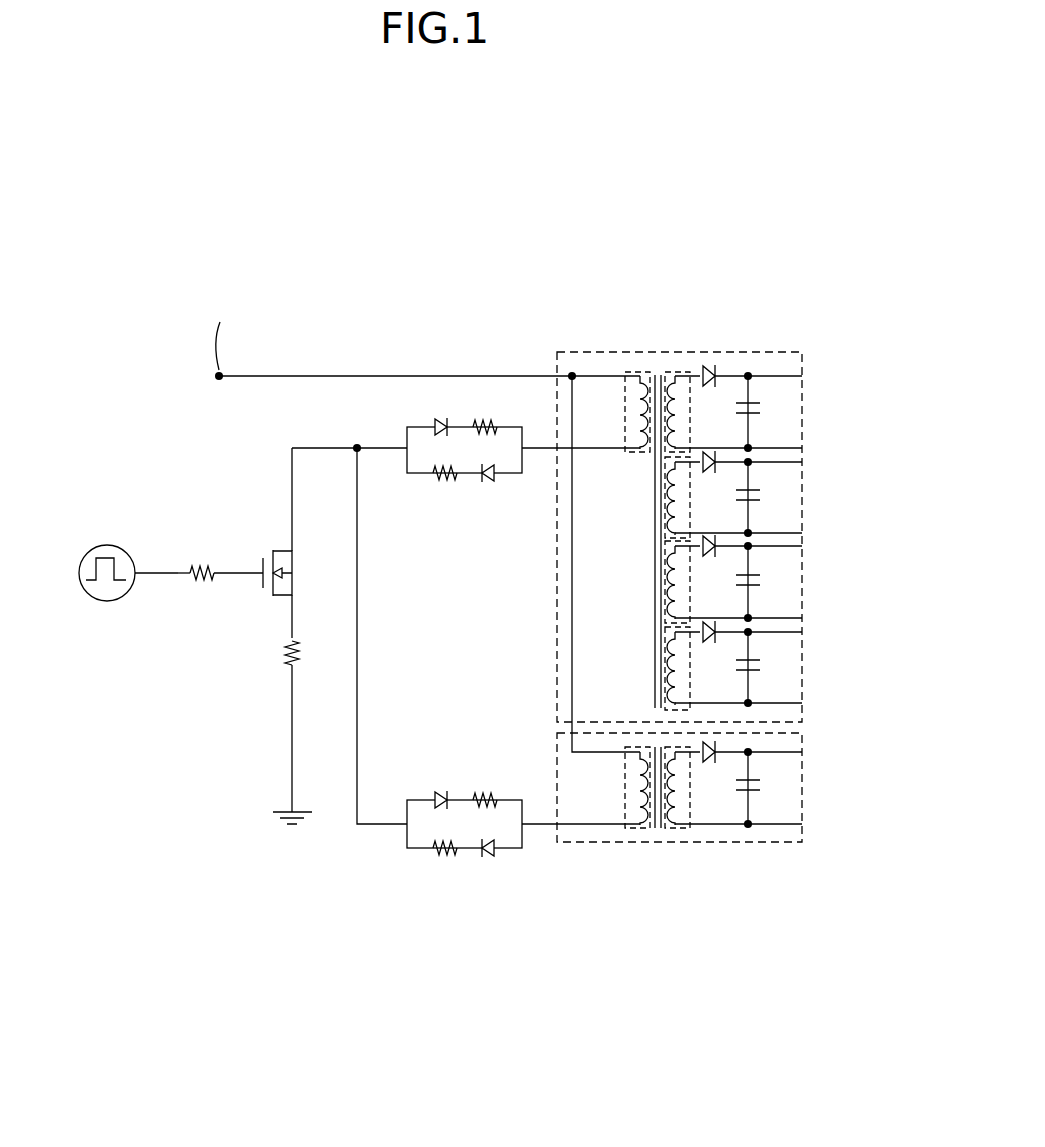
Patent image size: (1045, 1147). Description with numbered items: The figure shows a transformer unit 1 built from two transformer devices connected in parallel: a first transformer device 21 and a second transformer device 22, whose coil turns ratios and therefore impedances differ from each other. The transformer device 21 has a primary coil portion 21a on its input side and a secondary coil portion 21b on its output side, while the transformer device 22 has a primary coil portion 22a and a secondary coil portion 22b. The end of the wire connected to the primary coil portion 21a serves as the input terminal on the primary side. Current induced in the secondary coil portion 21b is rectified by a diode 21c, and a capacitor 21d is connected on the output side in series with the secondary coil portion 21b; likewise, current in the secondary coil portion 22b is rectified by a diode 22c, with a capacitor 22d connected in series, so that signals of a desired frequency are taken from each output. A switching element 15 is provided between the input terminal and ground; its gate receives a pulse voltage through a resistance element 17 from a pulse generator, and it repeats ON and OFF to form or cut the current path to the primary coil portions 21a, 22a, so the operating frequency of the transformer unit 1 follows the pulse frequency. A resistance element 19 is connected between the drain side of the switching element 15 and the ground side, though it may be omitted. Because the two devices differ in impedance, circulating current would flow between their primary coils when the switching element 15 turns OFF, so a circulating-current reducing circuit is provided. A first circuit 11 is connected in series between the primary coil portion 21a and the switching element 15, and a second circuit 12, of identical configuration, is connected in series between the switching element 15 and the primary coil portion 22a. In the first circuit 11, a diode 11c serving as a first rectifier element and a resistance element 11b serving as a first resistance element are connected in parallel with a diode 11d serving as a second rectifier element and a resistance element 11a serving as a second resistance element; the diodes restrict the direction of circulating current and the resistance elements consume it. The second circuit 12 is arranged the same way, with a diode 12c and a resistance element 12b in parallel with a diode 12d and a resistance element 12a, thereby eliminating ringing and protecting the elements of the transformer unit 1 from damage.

The transformer unit 1 is at (466, 173).
The first circuit 11 is at (490, 492).
The resistance element 11a is at (440, 482).
The resistance element 11b is at (473, 420).
The diode 11c is at (435, 424).
The diode 11d is at (492, 482).
The second circuit 12 is at (523, 843).
The resistance element 12a is at (440, 857).
The resistance element 12b is at (498, 797).
The diode 12c is at (437, 797).
The diode 12d is at (492, 857).
The switching element 15 is at (258, 546).
The resistance element 17 is at (196, 582).
The resistance element 19 is at (290, 665).
The transformer device 21 is at (705, 481).
The primary coil portion 21a is at (637, 372).
The secondary coil portion 21b is at (680, 372).
The diode 21c is at (713, 366).
The capacitor 21d is at (758, 403).
The transformer device 22 is at (705, 835).
The primary coil portion 22a is at (633, 843).
The secondary coil portion 22b is at (679, 843).
The diode 22c is at (722, 745).
The capacitor 22d is at (758, 780).